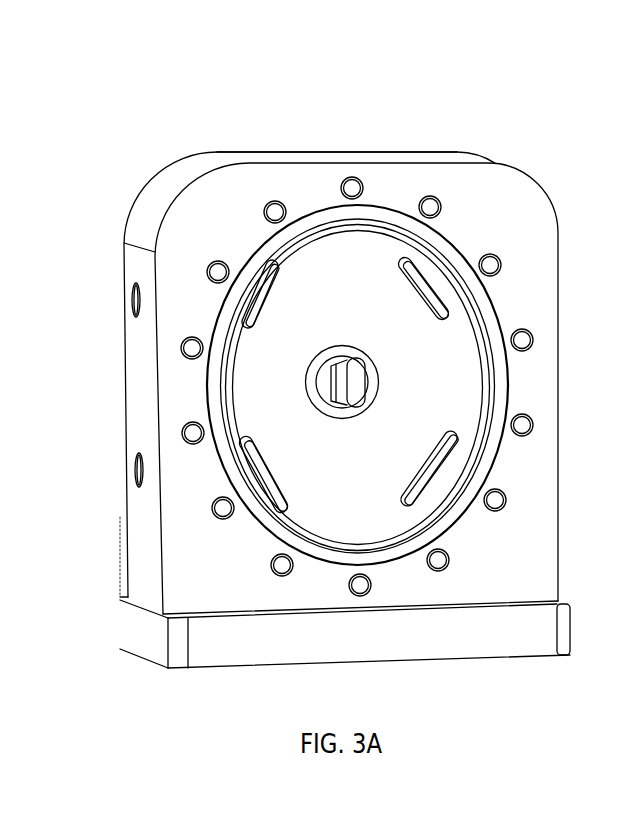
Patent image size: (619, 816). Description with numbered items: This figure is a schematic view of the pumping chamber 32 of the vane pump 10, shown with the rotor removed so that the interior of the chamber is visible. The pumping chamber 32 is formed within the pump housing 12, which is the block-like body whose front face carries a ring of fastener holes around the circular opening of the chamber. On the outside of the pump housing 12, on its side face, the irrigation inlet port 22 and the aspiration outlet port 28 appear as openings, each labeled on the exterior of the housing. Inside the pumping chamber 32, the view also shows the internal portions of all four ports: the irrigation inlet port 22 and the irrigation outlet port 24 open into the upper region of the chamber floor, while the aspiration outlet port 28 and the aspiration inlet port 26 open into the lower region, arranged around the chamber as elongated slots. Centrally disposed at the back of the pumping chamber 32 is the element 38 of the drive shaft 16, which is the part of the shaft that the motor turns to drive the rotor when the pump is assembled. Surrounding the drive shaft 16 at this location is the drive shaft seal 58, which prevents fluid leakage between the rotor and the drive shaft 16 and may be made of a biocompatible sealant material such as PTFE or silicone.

The vane pump 10 is at (97, 146).
The pump housing 12 is at (418, 150).
The drive shaft 16 is at (328, 378).
The irrigation inlet port 22 is at (130, 300).
The irrigation outlet port 24 is at (430, 312).
The aspiration inlet port 26 is at (412, 487).
The aspiration outlet port 28 is at (132, 470).
The pumping chamber 32 is at (315, 252).
The element of the drive shaft 38 is at (368, 385).
The drive shaft seal 58 is at (341, 348).